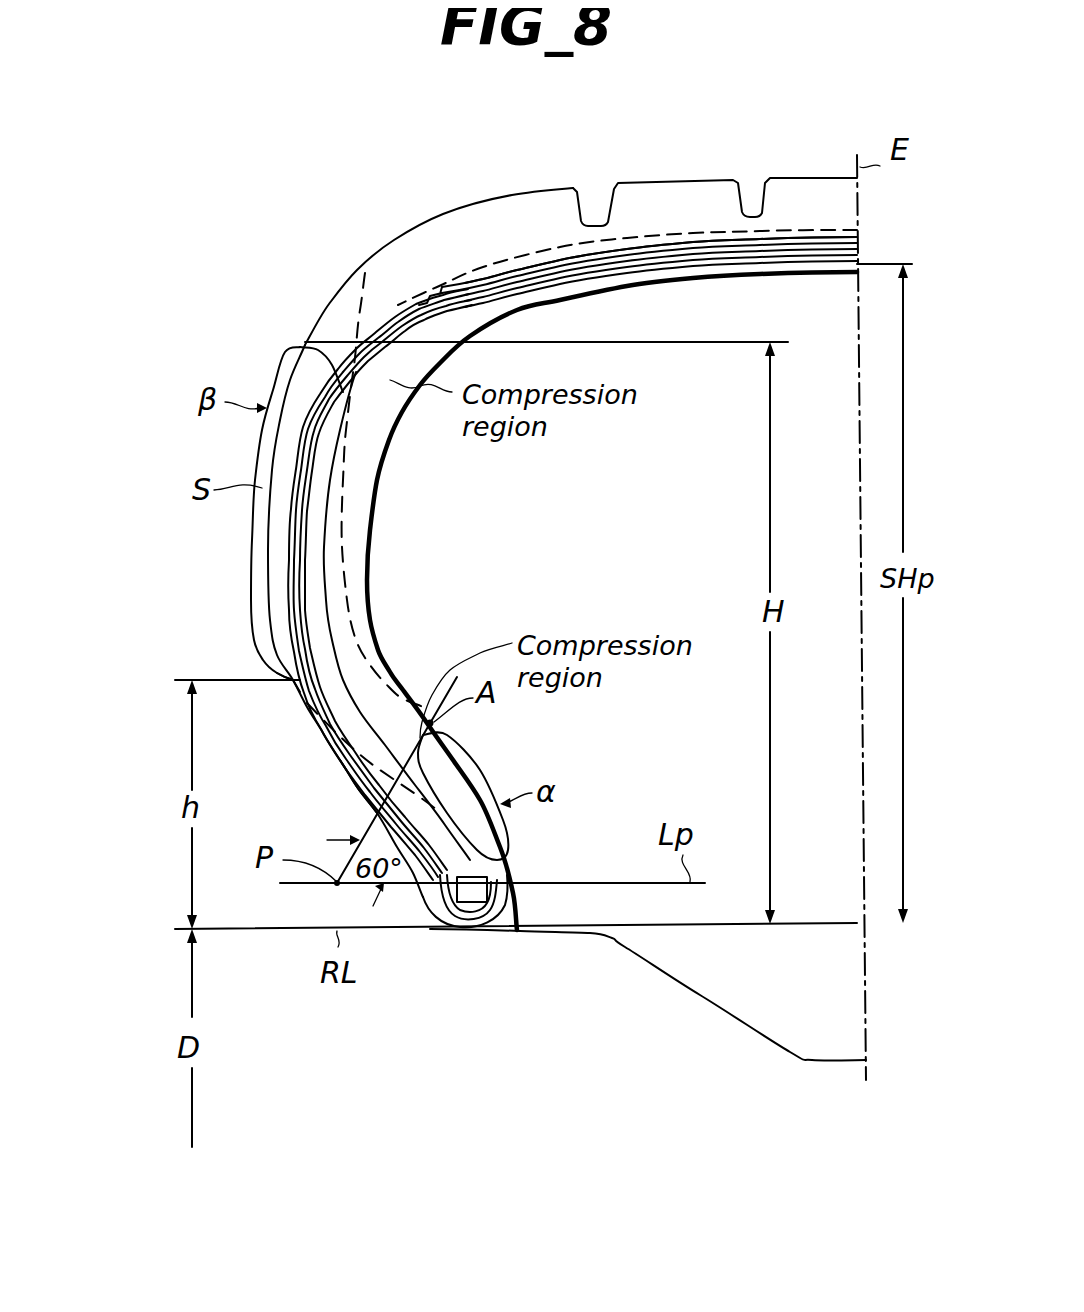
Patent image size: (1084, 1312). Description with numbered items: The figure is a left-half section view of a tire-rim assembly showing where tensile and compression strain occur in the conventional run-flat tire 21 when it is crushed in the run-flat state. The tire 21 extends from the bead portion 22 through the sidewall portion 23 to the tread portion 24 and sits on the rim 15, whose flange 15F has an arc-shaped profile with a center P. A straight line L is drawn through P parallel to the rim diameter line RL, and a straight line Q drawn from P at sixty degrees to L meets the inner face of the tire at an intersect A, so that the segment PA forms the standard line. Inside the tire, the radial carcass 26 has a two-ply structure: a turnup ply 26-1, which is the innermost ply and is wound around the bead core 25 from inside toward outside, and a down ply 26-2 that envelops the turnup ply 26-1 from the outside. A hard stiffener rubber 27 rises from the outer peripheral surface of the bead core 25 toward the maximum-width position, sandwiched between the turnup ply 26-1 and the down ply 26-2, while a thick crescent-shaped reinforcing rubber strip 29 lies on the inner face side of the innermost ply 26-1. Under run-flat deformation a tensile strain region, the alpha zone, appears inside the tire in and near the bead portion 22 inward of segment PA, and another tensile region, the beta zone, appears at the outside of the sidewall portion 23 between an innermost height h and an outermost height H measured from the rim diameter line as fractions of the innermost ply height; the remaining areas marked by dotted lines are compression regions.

The tire 21 is at (478, 203).
The tread portion 24 is at (797, 170).
The sidewall portion 23 is at (260, 555).
The radial carcass 26 is at (316, 495).
The reinforcing rubber strip 29 is at (337, 566).
The turnup ply 26-1 is at (353, 737).
The down ply 26-2 is at (325, 680).
The stiffener rubber 27 is at (428, 812).
The bead portion 22 is at (519, 852).
The bead core 25 is at (472, 896).
The rim 15 is at (646, 962).
The flange 15F is at (363, 820).